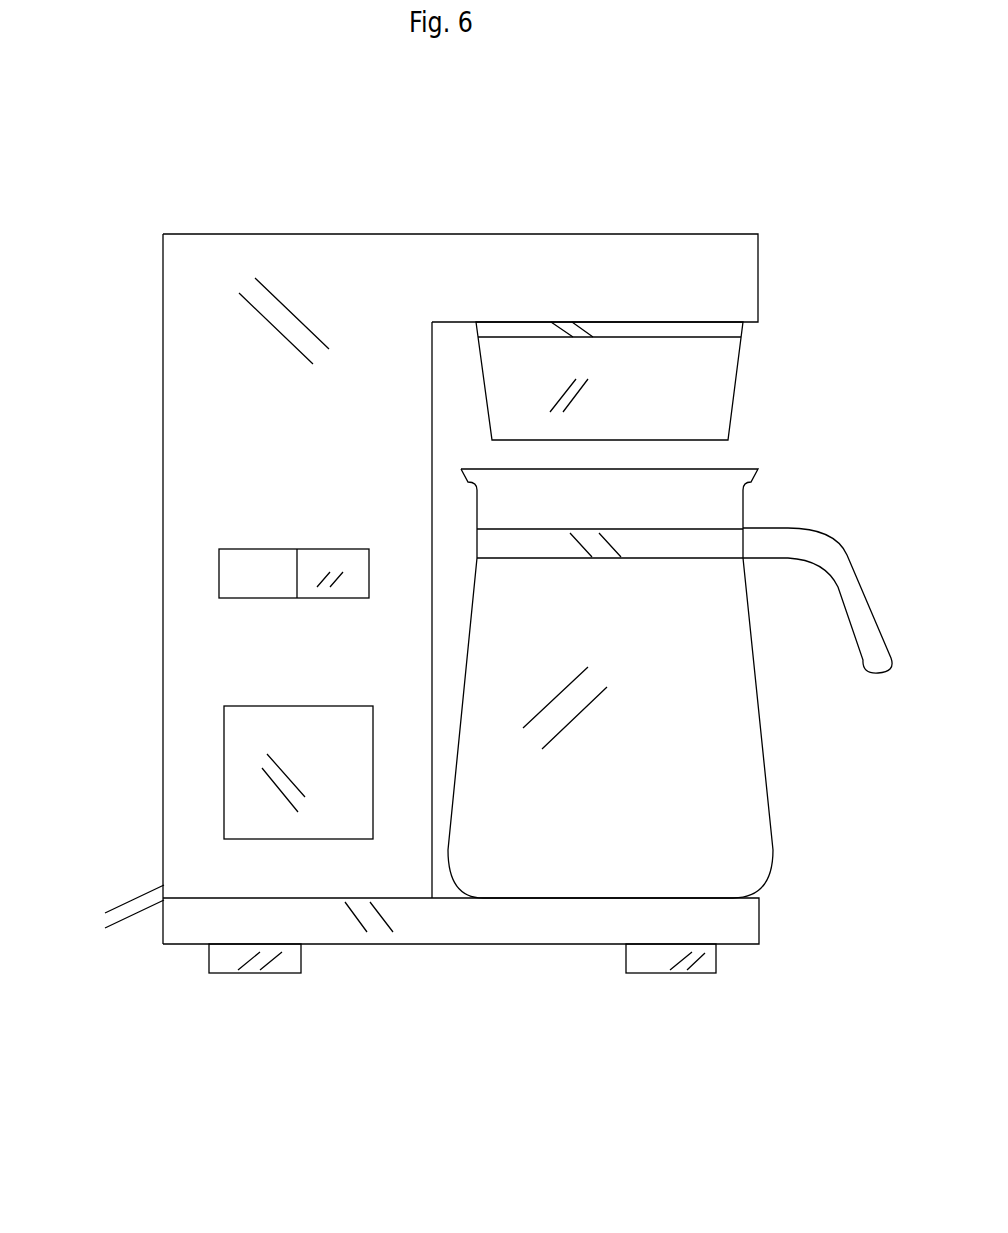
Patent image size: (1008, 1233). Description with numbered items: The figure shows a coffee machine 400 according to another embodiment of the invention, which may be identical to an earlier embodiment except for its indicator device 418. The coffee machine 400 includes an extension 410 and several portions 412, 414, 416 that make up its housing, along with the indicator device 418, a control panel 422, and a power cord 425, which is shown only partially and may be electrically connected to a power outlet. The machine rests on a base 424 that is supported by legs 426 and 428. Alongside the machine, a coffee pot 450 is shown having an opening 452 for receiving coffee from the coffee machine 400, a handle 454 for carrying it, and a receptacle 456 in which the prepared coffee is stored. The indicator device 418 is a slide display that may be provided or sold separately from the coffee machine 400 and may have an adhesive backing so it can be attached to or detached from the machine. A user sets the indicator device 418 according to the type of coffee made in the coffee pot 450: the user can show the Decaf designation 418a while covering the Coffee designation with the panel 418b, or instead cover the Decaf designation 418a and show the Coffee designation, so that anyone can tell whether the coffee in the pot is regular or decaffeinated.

The coffee machine 400 is at (610, 200).
The extension 410 is at (667, 272).
The portion 412 is at (705, 388).
The portion 414 is at (735, 330).
The portion 416 is at (232, 393).
The indicator device 418 is at (309, 524).
The Decaf designation 418a is at (248, 548).
The panel 418b is at (340, 555).
The control panel 422 is at (248, 743).
The base 424 is at (195, 920).
The power cord 425 is at (143, 902).
The leg 426 is at (288, 963).
The leg 428 is at (657, 962).
The coffee pot 450 is at (670, 665).
The opening 452 is at (732, 470).
The handle 454 is at (832, 567).
The receptacle 456 is at (710, 772).